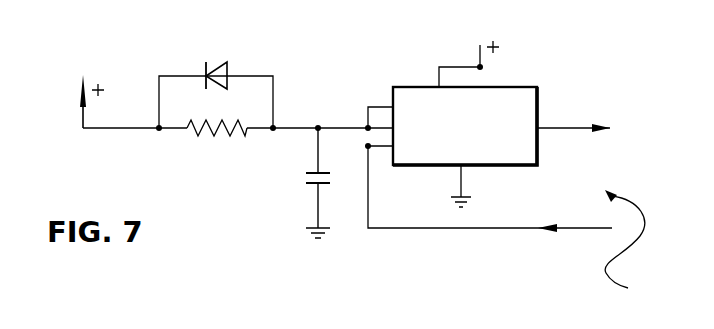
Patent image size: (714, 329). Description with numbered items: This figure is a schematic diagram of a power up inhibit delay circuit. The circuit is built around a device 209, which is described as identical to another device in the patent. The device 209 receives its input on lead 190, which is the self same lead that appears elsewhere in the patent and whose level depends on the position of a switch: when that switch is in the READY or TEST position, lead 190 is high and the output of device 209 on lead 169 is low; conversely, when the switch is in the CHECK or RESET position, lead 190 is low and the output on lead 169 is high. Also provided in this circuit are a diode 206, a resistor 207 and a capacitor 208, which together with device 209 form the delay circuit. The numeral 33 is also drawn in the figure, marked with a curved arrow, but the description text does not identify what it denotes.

The diode 206 is at (221, 58).
The resistor 207 is at (213, 133).
The capacitor 208 is at (312, 183).
The device 209 is at (415, 165).
The lead 169 is at (570, 123).
The lead 190 is at (462, 230).
The signal from element 33 is at (632, 247).